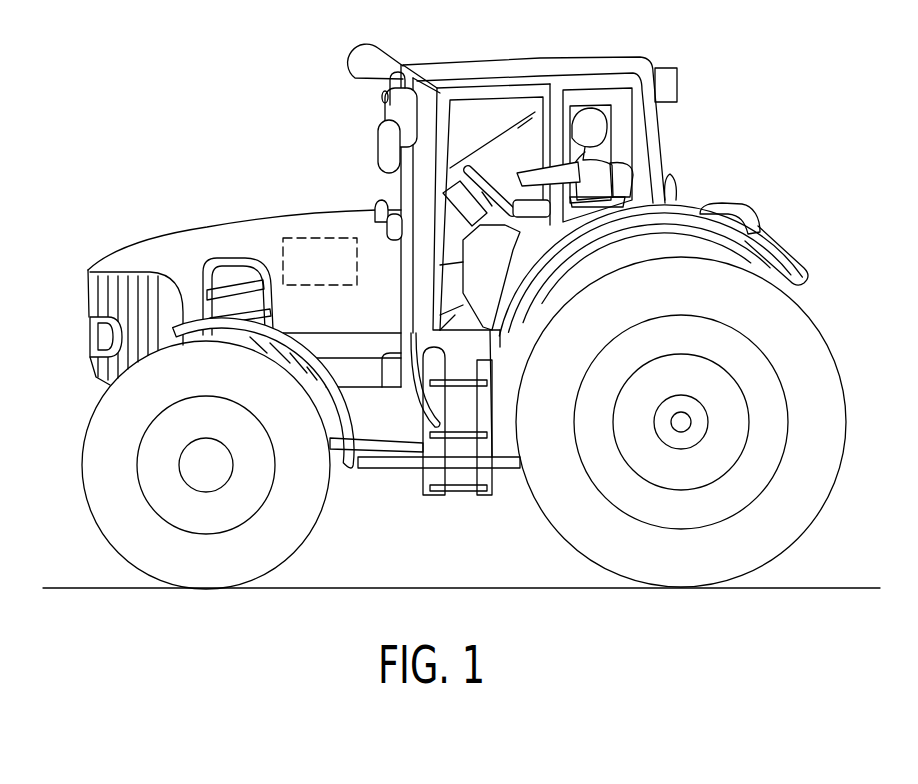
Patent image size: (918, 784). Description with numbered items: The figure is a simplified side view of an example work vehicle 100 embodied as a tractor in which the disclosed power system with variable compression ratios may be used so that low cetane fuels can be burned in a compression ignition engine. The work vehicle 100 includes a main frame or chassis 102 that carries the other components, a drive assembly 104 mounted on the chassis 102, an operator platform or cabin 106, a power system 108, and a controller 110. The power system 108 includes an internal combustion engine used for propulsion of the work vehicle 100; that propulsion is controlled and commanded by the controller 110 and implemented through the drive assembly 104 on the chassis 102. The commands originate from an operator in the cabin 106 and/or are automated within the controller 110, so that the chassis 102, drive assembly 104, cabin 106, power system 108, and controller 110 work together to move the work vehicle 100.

The work vehicle 100 is at (676, 40).
The main frame or chassis 102 is at (333, 455).
The drive assembly 104 is at (190, 467).
The operator platform or cabin 106 is at (486, 78).
The power system 108 is at (192, 240).
The controller 110 is at (320, 238).